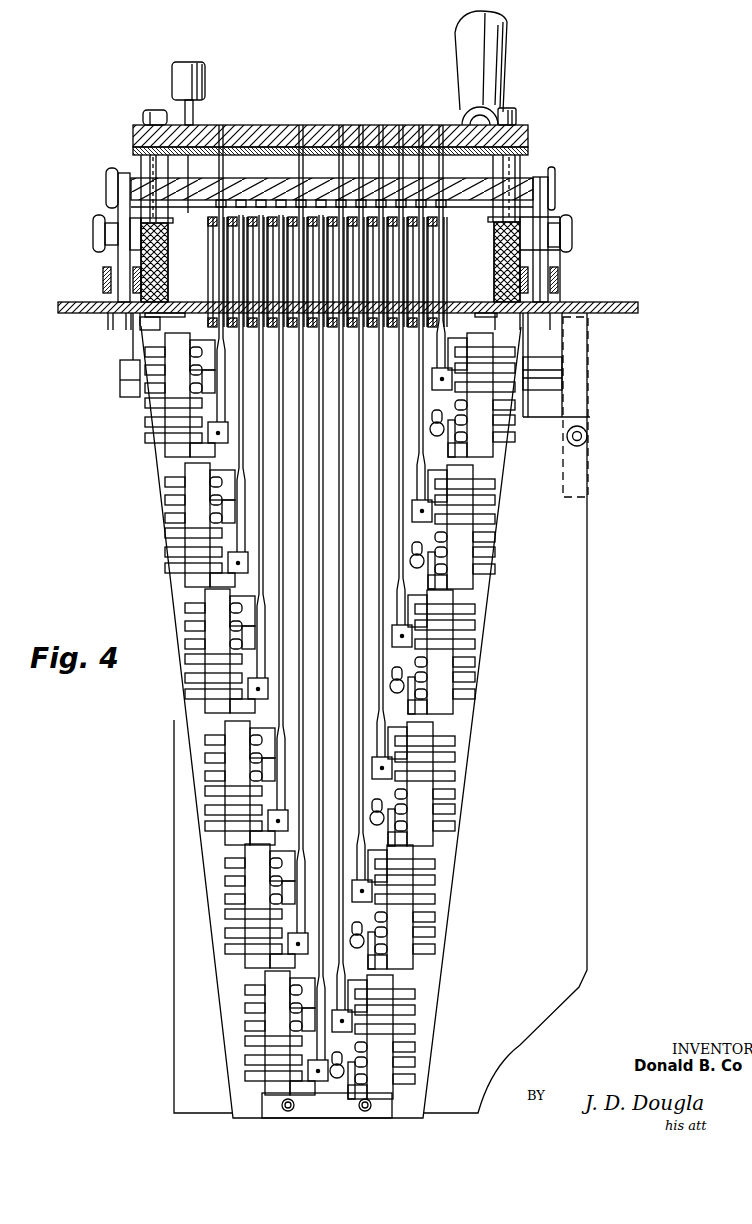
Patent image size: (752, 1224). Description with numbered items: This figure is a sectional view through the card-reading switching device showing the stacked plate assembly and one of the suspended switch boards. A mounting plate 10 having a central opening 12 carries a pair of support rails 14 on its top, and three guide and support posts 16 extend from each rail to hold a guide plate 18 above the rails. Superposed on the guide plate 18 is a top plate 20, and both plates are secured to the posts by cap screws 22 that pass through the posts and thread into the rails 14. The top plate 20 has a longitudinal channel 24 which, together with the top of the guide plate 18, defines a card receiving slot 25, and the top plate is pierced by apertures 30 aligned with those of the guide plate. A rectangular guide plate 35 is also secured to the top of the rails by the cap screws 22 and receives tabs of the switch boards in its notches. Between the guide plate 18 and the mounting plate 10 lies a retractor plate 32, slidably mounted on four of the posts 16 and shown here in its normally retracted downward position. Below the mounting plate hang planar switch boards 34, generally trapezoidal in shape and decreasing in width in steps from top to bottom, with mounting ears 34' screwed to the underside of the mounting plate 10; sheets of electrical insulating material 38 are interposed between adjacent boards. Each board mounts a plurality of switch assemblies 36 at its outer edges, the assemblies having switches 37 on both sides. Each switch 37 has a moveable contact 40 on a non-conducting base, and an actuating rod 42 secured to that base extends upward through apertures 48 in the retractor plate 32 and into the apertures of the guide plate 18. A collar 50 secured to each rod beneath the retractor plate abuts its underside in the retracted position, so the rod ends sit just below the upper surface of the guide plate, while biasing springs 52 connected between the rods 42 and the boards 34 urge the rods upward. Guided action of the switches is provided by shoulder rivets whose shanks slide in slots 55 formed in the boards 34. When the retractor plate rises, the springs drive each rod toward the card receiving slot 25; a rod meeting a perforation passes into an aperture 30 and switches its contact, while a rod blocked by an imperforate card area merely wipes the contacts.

The mounting plate 10 is at (617, 303).
The central opening 12 is at (168, 308).
The support rails 14 is at (165, 262).
The guide and support posts 16 is at (141, 164).
The guide plate 18 is at (528, 151).
The top plate 20 is at (528, 128).
The cap screws 22 is at (145, 117).
The longitudinal channel 24 is at (230, 148).
The card receiving slot 25 is at (389, 148).
The apertures 30 is at (294, 148).
The retractor plate 32 is at (462, 187).
The switch boards 34 is at (285, 687).
The mounting ears 34' is at (479, 302).
The rectangular guide plate 35 is at (490, 223).
The switch assemblies 36 is at (464, 577).
The switches 37 is at (490, 501).
The sheets of electrical insulating material 38 is at (450, 916).
The moveable contact 40 is at (413, 645).
The actuating rod 42 is at (304, 656).
The apertures 48 is at (327, 176).
The collar 50 is at (222, 203).
The biasing springs 52 is at (227, 313).
The slots 55 is at (438, 416).